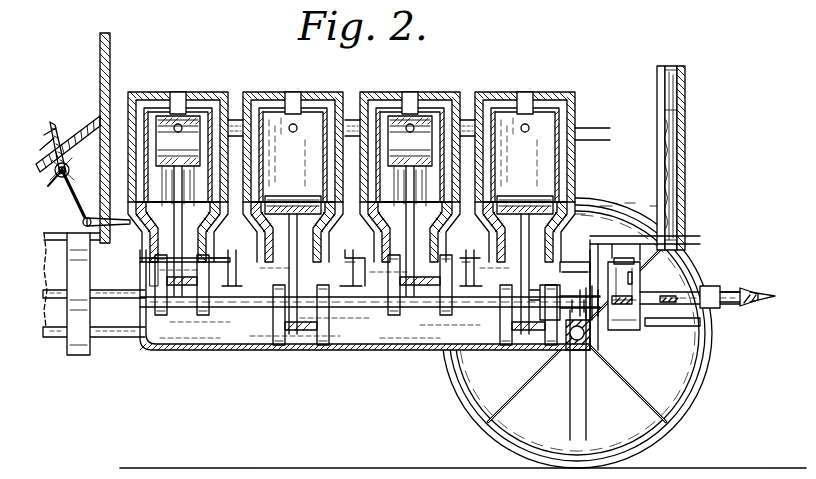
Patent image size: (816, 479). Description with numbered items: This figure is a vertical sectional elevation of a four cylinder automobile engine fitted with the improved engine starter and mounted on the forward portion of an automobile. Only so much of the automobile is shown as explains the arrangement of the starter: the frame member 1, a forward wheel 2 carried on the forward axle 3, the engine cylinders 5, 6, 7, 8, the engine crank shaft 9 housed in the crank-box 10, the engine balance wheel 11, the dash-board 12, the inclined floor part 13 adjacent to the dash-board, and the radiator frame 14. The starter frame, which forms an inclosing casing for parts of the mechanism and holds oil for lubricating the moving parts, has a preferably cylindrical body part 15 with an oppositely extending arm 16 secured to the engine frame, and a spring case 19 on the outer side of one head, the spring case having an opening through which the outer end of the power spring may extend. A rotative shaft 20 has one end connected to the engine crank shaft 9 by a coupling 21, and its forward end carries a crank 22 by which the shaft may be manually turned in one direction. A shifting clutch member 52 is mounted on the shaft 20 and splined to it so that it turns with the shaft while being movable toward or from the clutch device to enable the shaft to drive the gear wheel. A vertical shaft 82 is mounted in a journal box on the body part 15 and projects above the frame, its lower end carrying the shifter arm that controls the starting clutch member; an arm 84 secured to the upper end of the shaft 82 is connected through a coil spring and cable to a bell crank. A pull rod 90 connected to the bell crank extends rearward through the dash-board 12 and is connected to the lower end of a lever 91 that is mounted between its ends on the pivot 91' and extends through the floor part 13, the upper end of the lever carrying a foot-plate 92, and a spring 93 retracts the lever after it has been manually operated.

The frame member 1 is at (350, 250).
The forward wheel 2 is at (706, 392).
The forward axle 3 is at (572, 362).
The engine cylinder 5 is at (199, 110).
The engine cylinder 6 is at (310, 112).
The engine cylinder 7 is at (425, 112).
The engine cylinder 8 is at (540, 112).
The engine crank shaft 9 is at (330, 308).
The crank-box 10 is at (350, 351).
The engine balance wheel 11 is at (82, 356).
The dash-board 12 is at (100, 42).
The inclined floor part 13 is at (92, 120).
The radiator frame 14 is at (657, 78).
The body part 15 is at (628, 332).
The arm 16 is at (625, 312).
The spring case 19 is at (670, 328).
The rotative shaft 20 is at (700, 262).
The coupling 21 is at (550, 286).
The crank 22 is at (724, 286).
The shifting clutch member 52 is at (590, 290).
The shaft 82 is at (612, 262).
The arm 84 is at (627, 210).
The pull rod 90 is at (122, 228).
The lever 91 is at (54, 198).
The pivot 91' is at (40, 184).
The foot-plate 92 is at (50, 132).
The spring 93 is at (70, 172).